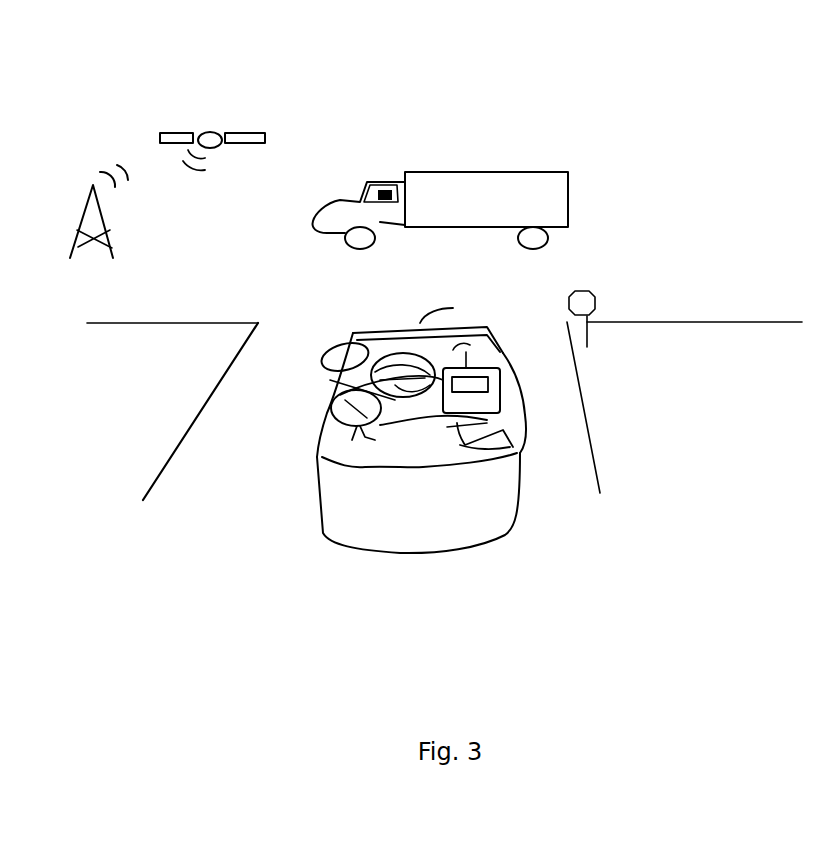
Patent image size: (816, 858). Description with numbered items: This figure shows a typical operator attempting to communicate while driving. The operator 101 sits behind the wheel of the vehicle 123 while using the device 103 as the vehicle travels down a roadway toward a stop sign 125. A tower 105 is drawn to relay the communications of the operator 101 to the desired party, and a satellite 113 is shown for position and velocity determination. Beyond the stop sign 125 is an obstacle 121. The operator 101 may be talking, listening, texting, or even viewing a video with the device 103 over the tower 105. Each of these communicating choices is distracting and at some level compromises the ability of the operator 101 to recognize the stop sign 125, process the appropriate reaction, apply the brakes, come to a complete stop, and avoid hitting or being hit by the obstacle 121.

The operator 101 is at (337, 447).
The device 103 is at (440, 368).
The tower 105 is at (77, 231).
The satellite 113 is at (190, 133).
The obstacle 121 is at (437, 173).
The vehicle 123 is at (520, 420).
The stop sign 125 is at (587, 293).